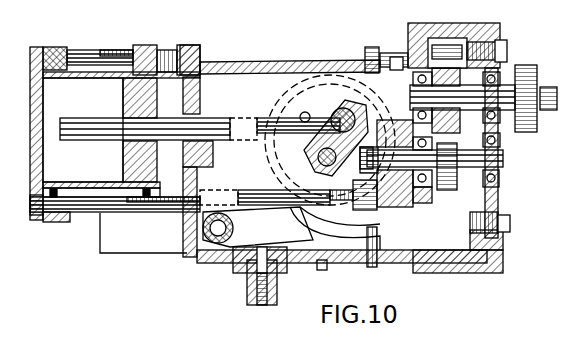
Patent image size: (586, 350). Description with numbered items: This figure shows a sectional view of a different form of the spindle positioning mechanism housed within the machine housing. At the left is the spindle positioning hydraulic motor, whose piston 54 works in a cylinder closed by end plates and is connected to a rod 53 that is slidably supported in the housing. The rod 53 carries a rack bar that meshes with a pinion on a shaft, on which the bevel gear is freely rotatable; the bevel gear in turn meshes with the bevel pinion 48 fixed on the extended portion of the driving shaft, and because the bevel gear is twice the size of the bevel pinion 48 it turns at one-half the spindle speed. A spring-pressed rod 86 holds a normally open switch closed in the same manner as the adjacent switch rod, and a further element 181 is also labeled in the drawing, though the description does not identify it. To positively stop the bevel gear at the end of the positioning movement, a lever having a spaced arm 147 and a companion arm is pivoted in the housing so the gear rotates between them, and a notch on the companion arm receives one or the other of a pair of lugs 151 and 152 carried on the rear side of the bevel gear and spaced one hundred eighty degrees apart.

The piston 54 is at (125, 163).
The rod 53 is at (223, 114).
The rod with ball 181 is at (291, 122).
The lug 152 is at (305, 112).
The spring-pressed rod 86 is at (290, 185).
The arm 147 is at (275, 231).
The lug 151 is at (383, 217).
The bevel pinion 48 is at (458, 144).